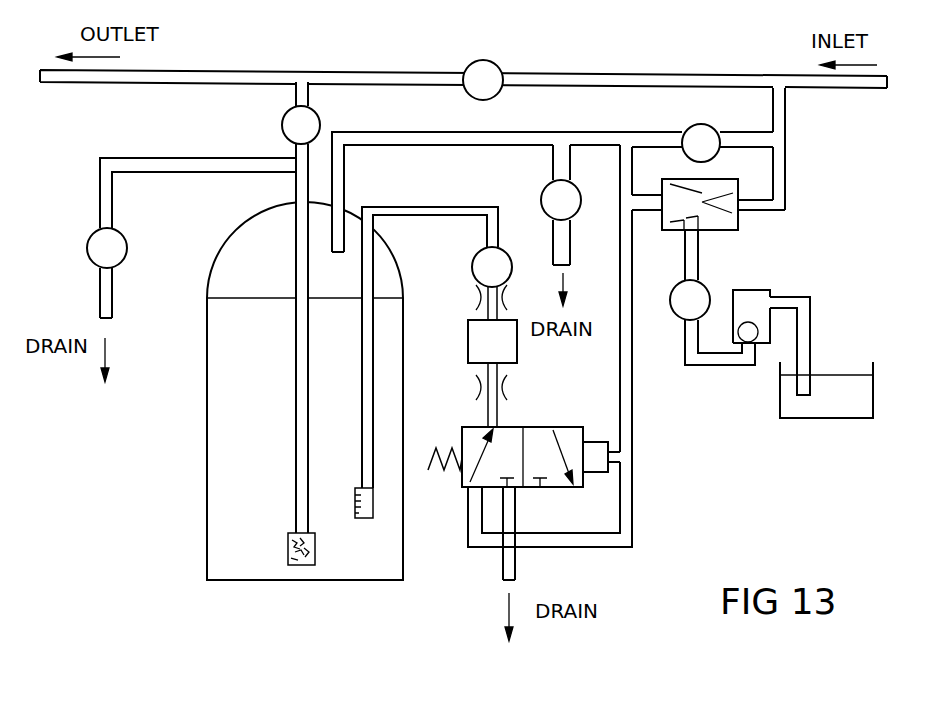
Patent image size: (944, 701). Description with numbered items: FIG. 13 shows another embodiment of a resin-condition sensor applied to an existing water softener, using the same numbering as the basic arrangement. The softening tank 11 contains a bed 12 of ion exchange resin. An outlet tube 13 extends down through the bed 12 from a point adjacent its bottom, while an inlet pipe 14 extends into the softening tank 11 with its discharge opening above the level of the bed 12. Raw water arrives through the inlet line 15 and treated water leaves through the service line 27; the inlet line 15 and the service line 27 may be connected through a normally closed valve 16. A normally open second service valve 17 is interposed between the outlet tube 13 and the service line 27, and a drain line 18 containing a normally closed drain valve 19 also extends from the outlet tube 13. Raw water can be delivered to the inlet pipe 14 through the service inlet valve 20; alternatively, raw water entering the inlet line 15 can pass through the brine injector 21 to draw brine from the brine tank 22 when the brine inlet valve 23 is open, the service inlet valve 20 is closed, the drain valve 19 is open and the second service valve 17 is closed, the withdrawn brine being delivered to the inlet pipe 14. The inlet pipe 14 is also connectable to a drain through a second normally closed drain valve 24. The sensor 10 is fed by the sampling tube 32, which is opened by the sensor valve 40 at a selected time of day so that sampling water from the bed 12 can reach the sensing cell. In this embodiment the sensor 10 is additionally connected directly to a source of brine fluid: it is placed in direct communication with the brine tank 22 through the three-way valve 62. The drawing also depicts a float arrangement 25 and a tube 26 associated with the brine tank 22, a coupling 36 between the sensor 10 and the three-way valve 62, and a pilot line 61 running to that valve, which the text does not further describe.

The sensor 10 is at (463, 320).
The softening tank 11 is at (206, 430).
The bed of ion exchange resin 12 is at (260, 430).
The outlet tube 13 is at (296, 253).
The inlet pipe 14 is at (344, 171).
The inlet line 15 is at (818, 90).
The normally closed valve 16 is at (483, 60).
The second service valve 17 is at (282, 118).
The drain line 18 is at (195, 158).
The drain valve 19 is at (90, 236).
The service inlet valve 20 is at (698, 124).
The brine injector 21 is at (742, 238).
The brine tank 22 is at (873, 410).
The brine inlet valve 23 is at (678, 316).
The second normally closed drain valve 24 is at (549, 185).
The float valve 25 is at (757, 290).
The tube 26 is at (810, 327).
The service line 27 is at (219, 70).
The sampling tube 32 is at (418, 207).
The flexible coupling 36 is at (484, 406).
The sensor valve 40 is at (479, 254).
The pilot pipe 61 is at (632, 433).
The three-way valve 62 is at (538, 427).